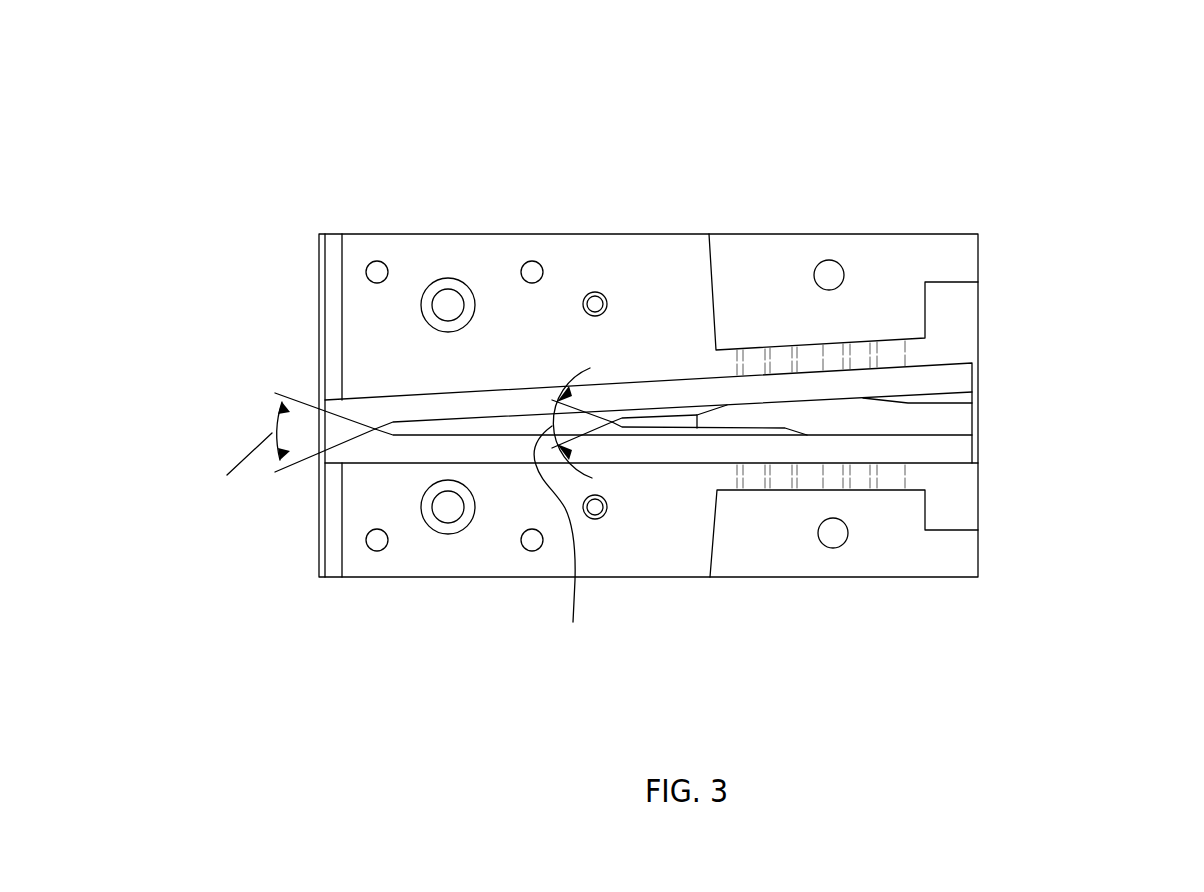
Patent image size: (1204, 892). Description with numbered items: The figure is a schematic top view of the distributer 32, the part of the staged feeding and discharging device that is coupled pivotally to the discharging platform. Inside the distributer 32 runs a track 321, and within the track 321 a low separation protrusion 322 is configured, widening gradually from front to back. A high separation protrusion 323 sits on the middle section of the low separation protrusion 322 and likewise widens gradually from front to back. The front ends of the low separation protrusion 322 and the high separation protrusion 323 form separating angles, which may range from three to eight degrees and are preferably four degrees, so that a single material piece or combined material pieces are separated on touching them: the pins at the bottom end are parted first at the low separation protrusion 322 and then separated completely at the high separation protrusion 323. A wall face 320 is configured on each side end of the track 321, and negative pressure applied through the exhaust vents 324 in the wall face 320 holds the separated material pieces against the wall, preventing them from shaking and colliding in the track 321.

The distributer 32 is at (691, 352).
The wall face 320 is at (833, 372).
The track 321 is at (521, 402).
The low separation protrusion 322 is at (507, 425).
The high separation protrusion 323 is at (713, 420).
The exhaust vents 324 is at (763, 373).